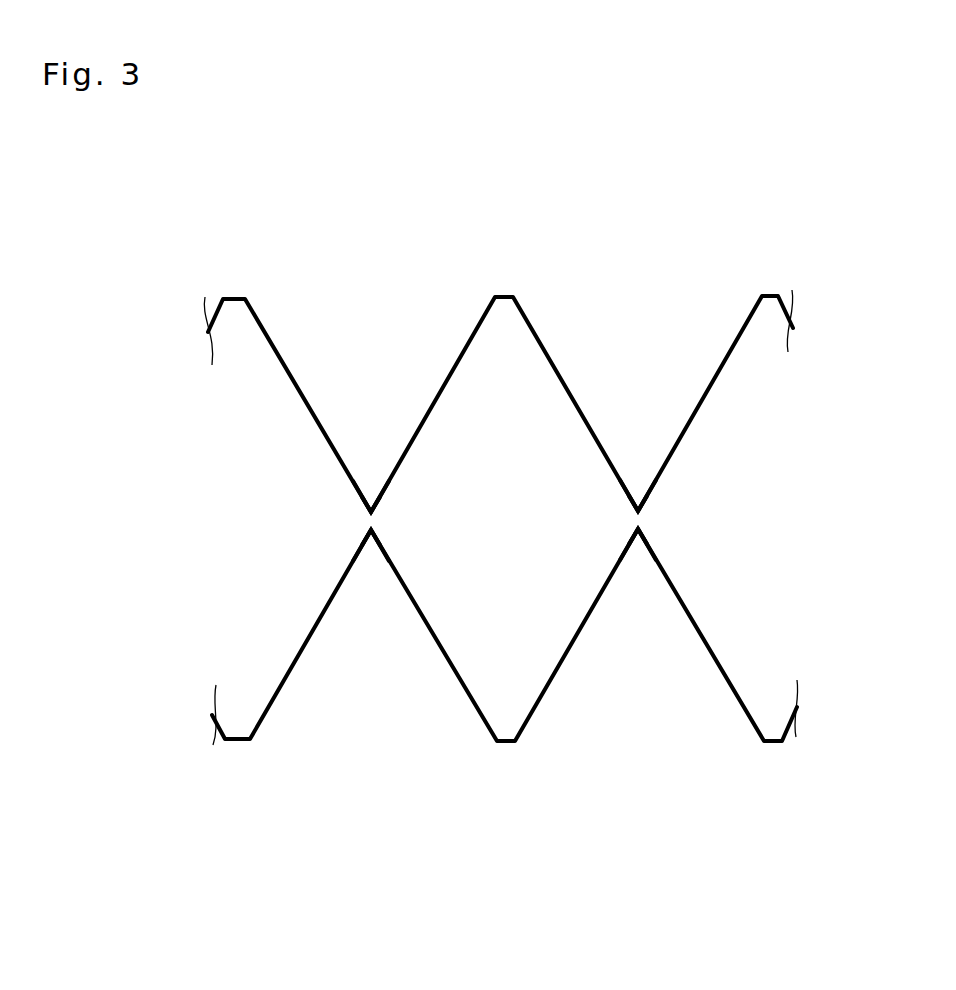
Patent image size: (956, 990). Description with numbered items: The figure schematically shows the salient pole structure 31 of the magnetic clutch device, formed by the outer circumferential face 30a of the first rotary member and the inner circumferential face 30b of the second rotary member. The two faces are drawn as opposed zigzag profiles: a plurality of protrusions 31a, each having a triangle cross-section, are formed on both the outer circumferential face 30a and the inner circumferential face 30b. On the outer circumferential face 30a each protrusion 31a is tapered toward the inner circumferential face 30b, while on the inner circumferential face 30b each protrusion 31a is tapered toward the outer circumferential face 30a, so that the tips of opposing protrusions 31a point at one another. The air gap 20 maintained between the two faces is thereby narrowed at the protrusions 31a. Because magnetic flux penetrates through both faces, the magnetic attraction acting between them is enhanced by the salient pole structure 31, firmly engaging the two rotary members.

The salient pole structure 31 is at (529, 493).
The protrusions 31a is at (367, 513).
The air gap 20 is at (396, 514).
The outer circumferential face 30a is at (725, 766).
The inner circumferential face 30b is at (270, 268).